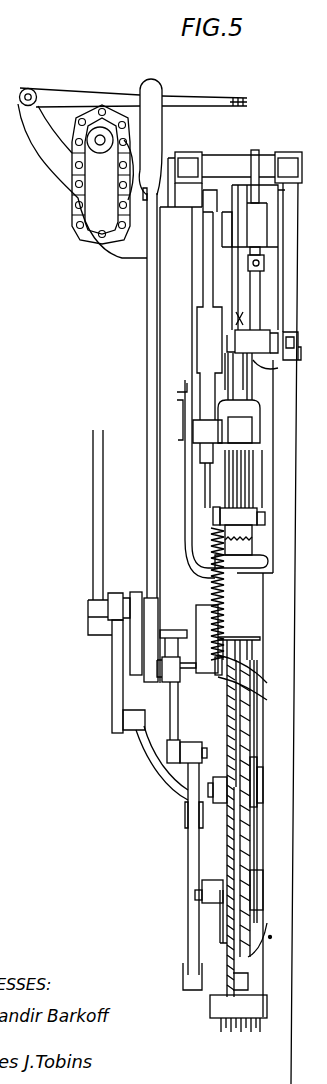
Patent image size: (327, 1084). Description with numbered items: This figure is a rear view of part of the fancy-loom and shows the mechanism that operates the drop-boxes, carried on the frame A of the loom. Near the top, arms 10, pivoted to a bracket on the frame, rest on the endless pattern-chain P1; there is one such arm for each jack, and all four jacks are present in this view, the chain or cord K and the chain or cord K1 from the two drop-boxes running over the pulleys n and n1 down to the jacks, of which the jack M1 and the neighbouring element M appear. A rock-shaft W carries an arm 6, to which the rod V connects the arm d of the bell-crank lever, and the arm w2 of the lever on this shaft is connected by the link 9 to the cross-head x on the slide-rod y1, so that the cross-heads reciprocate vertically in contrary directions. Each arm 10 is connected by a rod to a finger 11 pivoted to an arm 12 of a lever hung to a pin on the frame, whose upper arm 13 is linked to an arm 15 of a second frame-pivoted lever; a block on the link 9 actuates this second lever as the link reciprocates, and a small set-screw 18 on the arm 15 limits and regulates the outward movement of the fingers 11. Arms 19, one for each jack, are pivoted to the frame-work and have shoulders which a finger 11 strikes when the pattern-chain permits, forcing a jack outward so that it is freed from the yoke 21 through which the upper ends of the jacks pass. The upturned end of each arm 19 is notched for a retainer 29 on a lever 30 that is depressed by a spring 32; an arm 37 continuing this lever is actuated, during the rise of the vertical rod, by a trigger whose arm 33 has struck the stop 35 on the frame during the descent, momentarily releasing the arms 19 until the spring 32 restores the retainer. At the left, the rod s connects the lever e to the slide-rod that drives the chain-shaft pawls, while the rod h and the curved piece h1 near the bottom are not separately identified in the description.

The arms 10 is at (134, 95).
The endless chain P1 is at (82, 181).
The rod V is at (147, 380).
The rod s is at (93, 470).
The rock-shaft W is at (302, 165).
The arm 6 is at (175, 173).
The arm of lever w2 is at (265, 176).
The yoke 21 is at (253, 257).
The set-screw 18 is at (256, 245).
The arm of lever 15 is at (264, 263).
The link 9 is at (232, 237).
The slide-rod y1 is at (209, 305).
The frame A is at (192, 297).
The upper arm of lever 13 is at (257, 303).
The cross-head x is at (237, 320).
The arm of lever 12 is at (242, 387).
The arm of trigger 33 is at (175, 382).
The stop 35 is at (171, 418).
The finger 11 is at (239, 421).
The arms 19 is at (247, 472).
The arm 37 is at (205, 486).
The lever 30 is at (213, 518).
The retainer 29 is at (241, 538).
The spring 32 is at (226, 594).
The block M is at (234, 645).
The jacks M1 is at (252, 645).
The chain or cord K is at (235, 732).
The chain or cord K1 is at (250, 750).
The lever e is at (112, 676).
The arm of bell-crank lever d is at (178, 706).
The curved arm h1 is at (140, 749).
The rod h is at (187, 843).
The pulley n is at (220, 940).
The pulley n1 is at (228, 987).